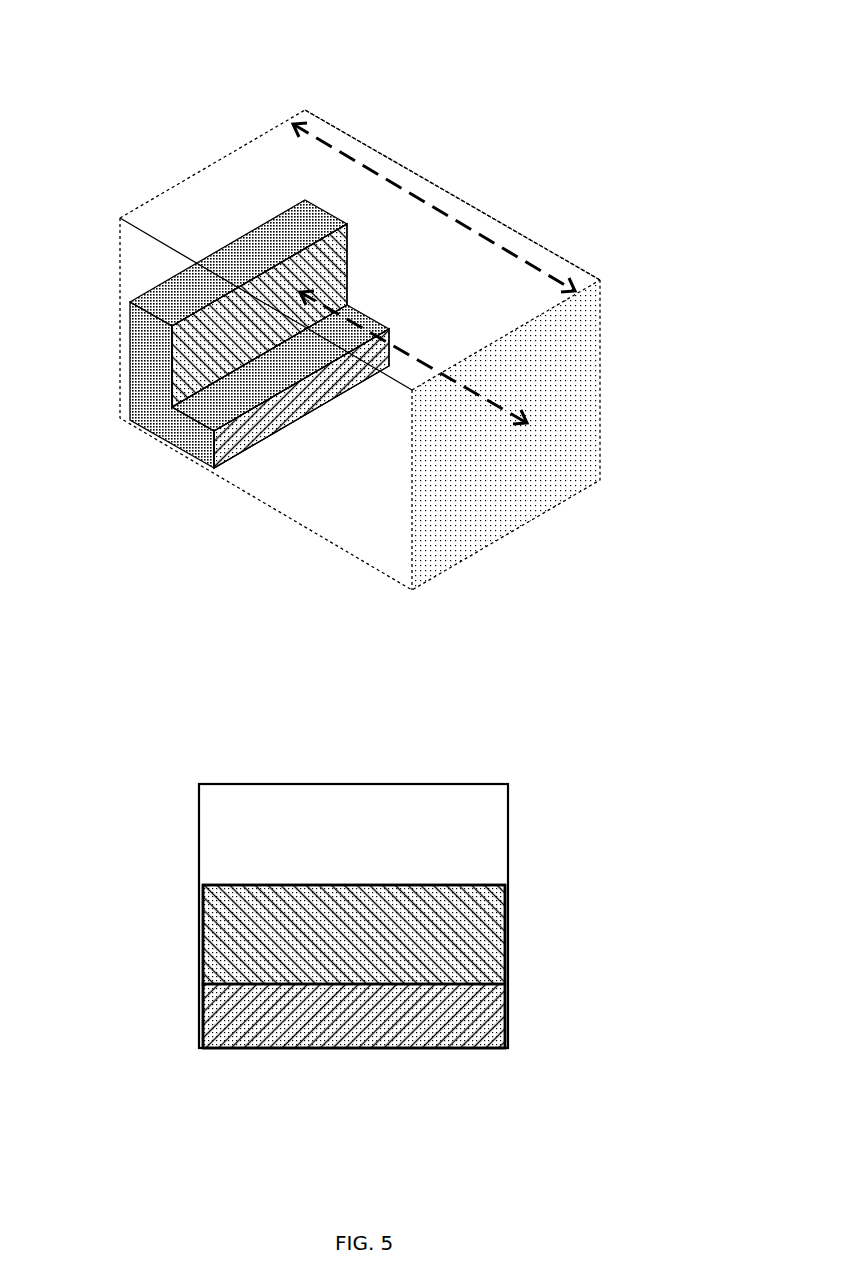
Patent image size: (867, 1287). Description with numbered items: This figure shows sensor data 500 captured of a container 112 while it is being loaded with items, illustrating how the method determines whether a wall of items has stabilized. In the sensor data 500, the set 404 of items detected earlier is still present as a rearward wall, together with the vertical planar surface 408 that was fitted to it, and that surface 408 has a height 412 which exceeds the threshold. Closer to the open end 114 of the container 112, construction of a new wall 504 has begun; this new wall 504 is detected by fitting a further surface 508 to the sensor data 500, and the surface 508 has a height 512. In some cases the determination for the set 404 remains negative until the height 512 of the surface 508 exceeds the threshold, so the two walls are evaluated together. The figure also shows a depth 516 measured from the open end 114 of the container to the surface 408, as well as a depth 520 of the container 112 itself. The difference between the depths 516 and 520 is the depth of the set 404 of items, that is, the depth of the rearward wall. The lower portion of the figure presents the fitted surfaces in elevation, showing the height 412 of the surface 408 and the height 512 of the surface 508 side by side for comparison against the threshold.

The sensor data 500 is at (403, 92).
The container 112 is at (583, 264).
The open end 114 is at (601, 437).
The set of items 404 is at (136, 364).
The vertical planar surface 408 is at (122, 407).
The new wall 504 is at (186, 442).
The surface 508 is at (242, 447).
The height 512 is at (180, 992).
The height 412 is at (523, 893).
The depth 516 is at (487, 392).
The depth 520 is at (513, 257).